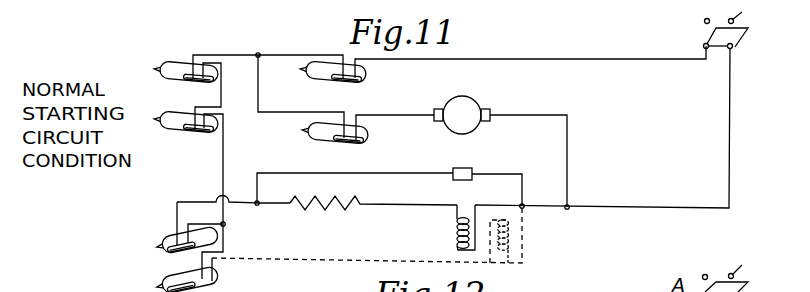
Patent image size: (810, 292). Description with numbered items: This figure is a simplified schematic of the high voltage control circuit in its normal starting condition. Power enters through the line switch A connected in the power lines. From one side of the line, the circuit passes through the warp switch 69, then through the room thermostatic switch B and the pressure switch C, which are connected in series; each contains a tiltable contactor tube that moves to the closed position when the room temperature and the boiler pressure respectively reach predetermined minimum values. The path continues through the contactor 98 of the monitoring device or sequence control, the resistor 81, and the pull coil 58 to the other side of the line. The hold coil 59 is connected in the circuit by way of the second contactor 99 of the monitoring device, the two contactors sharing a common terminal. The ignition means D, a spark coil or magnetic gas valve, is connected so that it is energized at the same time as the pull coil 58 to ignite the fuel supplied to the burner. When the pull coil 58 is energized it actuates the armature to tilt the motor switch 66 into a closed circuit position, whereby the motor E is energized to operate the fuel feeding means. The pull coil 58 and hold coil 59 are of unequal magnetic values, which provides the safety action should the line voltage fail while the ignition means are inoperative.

The thermostatic switch B is at (182, 71).
The pressure switch C is at (181, 129).
The warp switch 69 is at (367, 75).
The motor switch 66 is at (369, 134).
The motor E is at (489, 99).
The line switch A is at (707, 33).
The ignition means D is at (468, 178).
The resistor 81 is at (333, 212).
The pull coil 58 is at (469, 256).
The hold coil 59 is at (510, 265).
The contactor 98 is at (164, 240).
The contactor 99 is at (163, 278).